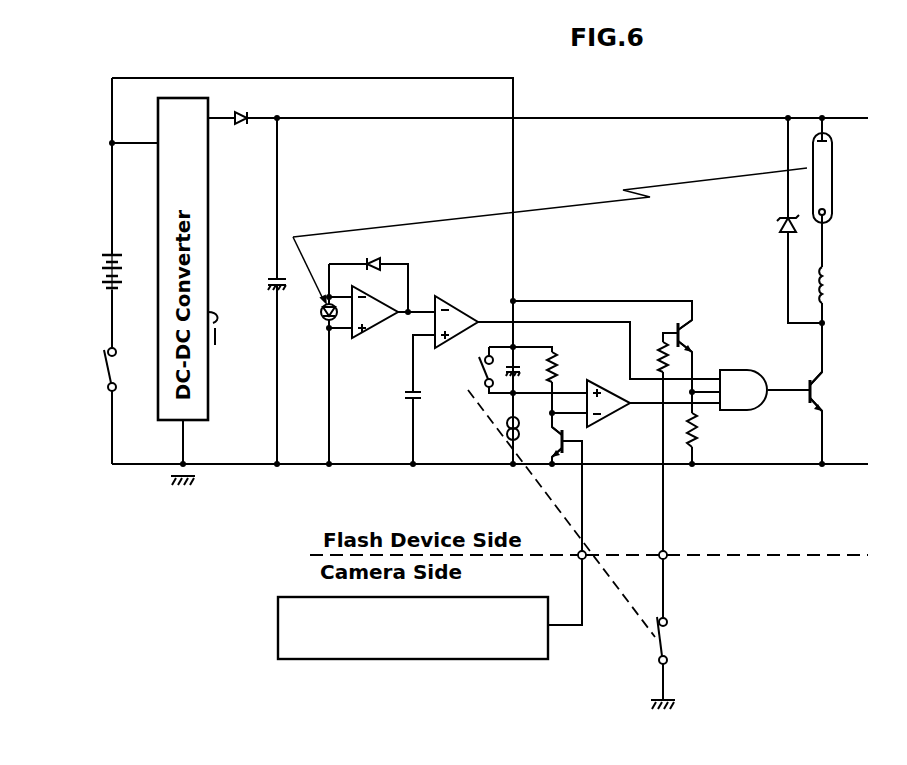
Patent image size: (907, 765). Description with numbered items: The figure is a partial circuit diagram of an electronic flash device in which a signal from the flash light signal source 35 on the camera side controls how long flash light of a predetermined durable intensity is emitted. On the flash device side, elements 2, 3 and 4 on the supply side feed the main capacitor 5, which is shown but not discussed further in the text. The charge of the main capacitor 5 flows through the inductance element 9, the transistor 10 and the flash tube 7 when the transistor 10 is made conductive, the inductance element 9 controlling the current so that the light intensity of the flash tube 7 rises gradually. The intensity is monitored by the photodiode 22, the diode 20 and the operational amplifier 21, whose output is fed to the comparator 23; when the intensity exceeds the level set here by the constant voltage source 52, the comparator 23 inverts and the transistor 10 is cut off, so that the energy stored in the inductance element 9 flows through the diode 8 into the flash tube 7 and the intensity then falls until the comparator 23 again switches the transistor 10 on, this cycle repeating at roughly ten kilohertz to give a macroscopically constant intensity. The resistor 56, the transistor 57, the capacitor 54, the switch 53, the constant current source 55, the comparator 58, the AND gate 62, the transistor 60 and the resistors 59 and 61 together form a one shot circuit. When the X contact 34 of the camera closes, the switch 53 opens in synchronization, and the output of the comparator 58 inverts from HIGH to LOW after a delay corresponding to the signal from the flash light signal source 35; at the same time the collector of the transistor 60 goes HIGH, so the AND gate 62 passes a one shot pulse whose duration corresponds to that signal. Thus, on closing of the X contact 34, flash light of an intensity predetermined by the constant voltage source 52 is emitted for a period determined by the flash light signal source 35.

The battery 2 is at (103, 268).
The power switch 3 is at (108, 369).
The diode 4 is at (239, 112).
The main capacitor 5 is at (269, 281).
The flash tube 7 is at (840, 150).
The diode 8 is at (779, 231).
The inductance element 9 is at (826, 286).
The transistor 10 is at (812, 392).
The diode 20 is at (377, 258).
The operational amplifier 21 is at (380, 332).
The photodiode 22 is at (320, 312).
The comparator 23 is at (470, 296).
The X contact 34 is at (660, 638).
The flash light signal source 35 is at (278, 637).
The constant voltage source 52 is at (408, 394).
The switch 53 is at (478, 373).
The capacitor 54 is at (487, 357).
The constant current source 55 is at (507, 422).
The resistor 56 is at (565, 350).
The transistor 57 is at (560, 437).
The comparator 58 is at (612, 410).
The resistor 59 is at (667, 362).
The transistor 60 is at (684, 344).
The resistor 61 is at (696, 430).
The AND gate 62 is at (748, 370).